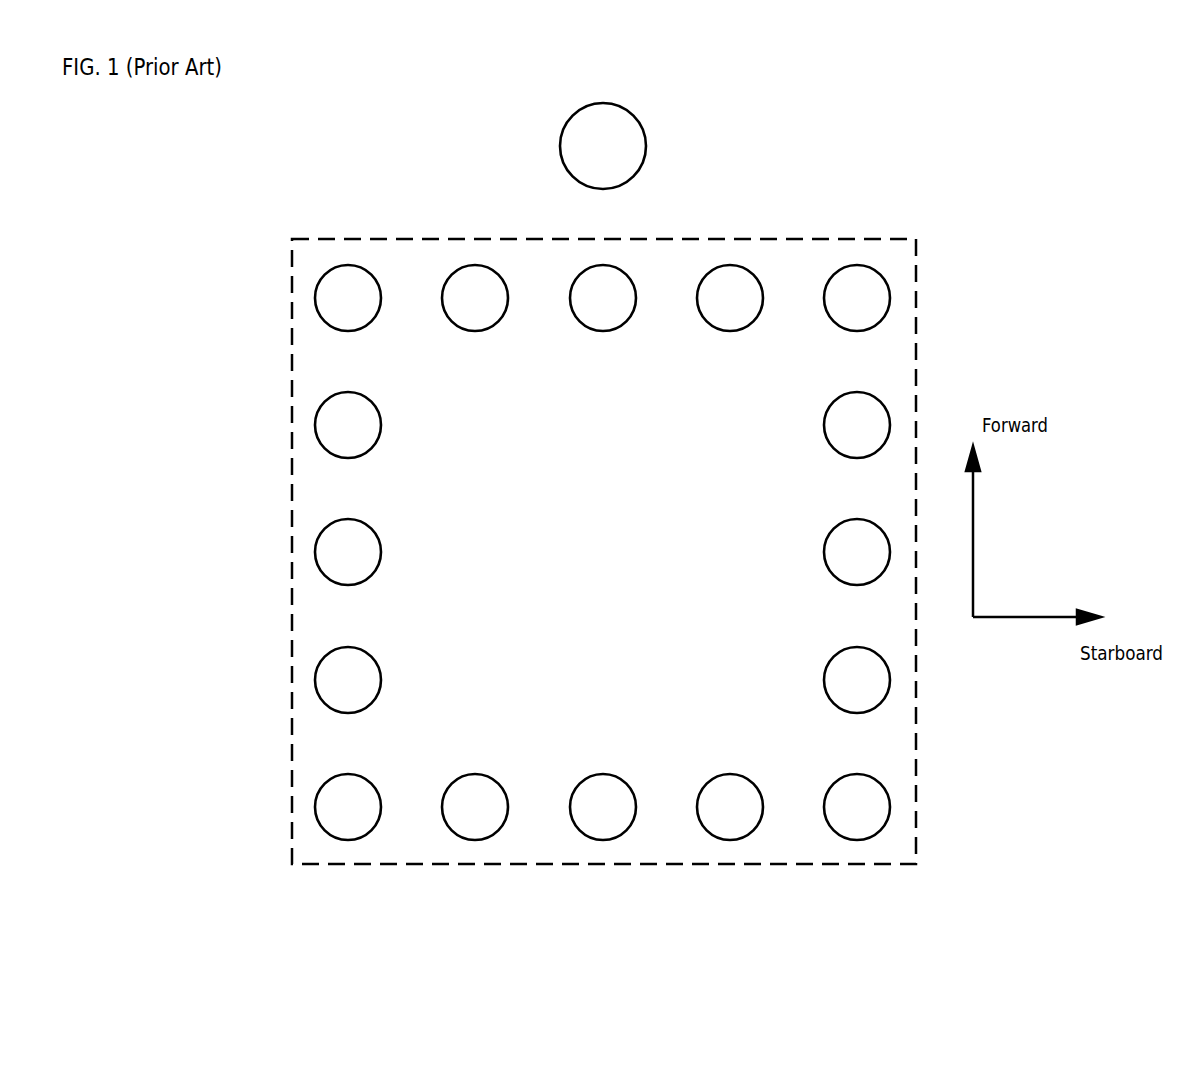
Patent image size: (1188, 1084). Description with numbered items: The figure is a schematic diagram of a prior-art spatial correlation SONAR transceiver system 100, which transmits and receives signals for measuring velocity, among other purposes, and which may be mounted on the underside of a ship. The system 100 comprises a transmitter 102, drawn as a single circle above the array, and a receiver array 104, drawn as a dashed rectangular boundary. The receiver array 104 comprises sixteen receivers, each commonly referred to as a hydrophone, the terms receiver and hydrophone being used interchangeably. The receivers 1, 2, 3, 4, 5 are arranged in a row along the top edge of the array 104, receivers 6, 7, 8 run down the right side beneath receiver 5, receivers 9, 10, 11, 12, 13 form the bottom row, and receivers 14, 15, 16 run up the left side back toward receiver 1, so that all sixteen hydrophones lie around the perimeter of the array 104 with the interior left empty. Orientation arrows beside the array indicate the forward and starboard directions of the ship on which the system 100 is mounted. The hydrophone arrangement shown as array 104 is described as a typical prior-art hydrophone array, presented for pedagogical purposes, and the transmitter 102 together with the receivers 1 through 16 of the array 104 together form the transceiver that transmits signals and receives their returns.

The spatial correlation SONAR transceiver system 100 is at (255, 187).
The transmitter 102 is at (639, 135).
The receiver array 104 is at (647, 533).
The receiver 1 is at (348, 298).
The receiver 2 is at (475, 298).
The receiver 3 is at (603, 298).
The receiver 4 is at (730, 298).
The receiver 5 is at (857, 298).
The receiver 6 is at (857, 425).
The receiver 7 is at (857, 552).
The receiver 8 is at (857, 680).
The receiver 9 is at (857, 807).
The receiver 10 is at (730, 807).
The receiver 11 is at (603, 807).
The receiver 12 is at (475, 807).
The receiver 13 is at (348, 807).
The receiver 14 is at (348, 680).
The receiver 15 is at (348, 552).
The receiver 16 is at (348, 425).